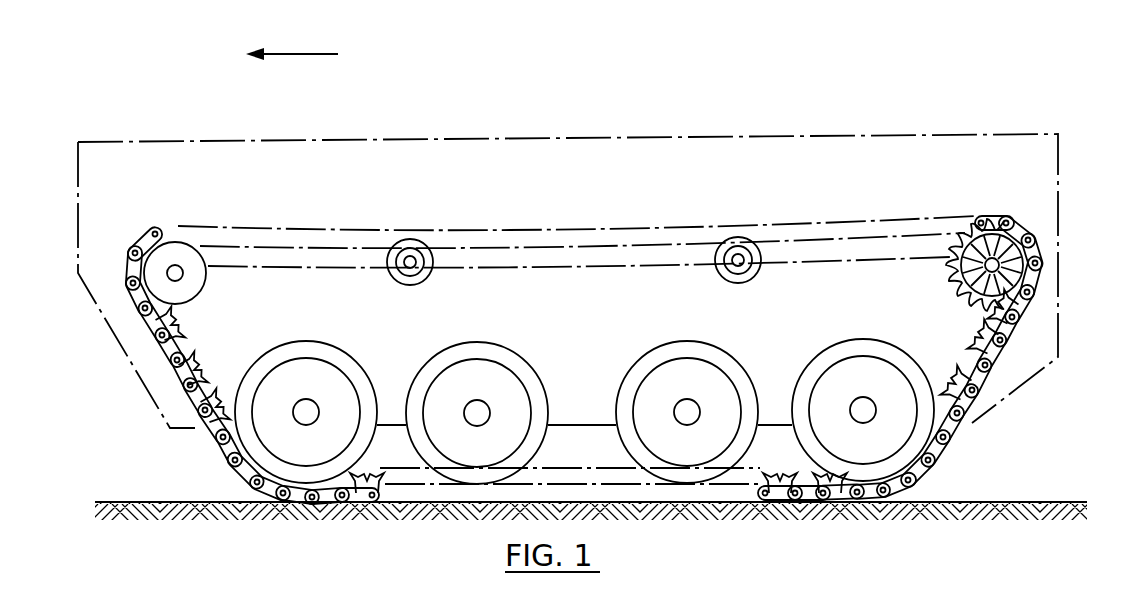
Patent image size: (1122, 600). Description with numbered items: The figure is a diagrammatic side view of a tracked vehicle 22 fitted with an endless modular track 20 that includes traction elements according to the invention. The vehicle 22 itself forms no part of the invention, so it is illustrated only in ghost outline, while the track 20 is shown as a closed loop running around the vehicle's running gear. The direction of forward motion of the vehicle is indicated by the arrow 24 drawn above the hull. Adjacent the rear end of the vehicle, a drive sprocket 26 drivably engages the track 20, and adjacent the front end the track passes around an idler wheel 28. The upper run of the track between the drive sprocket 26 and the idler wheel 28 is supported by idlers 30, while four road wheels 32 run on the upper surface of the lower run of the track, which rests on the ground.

The track 20 is at (210, 456).
The tracked vehicle 22 is at (1010, 160).
The arrow 24 is at (312, 56).
The drive sprocket 26 is at (938, 286).
The idler wheel 28 is at (197, 282).
The idlers 30 is at (428, 278).
The road wheels 32 is at (410, 362).